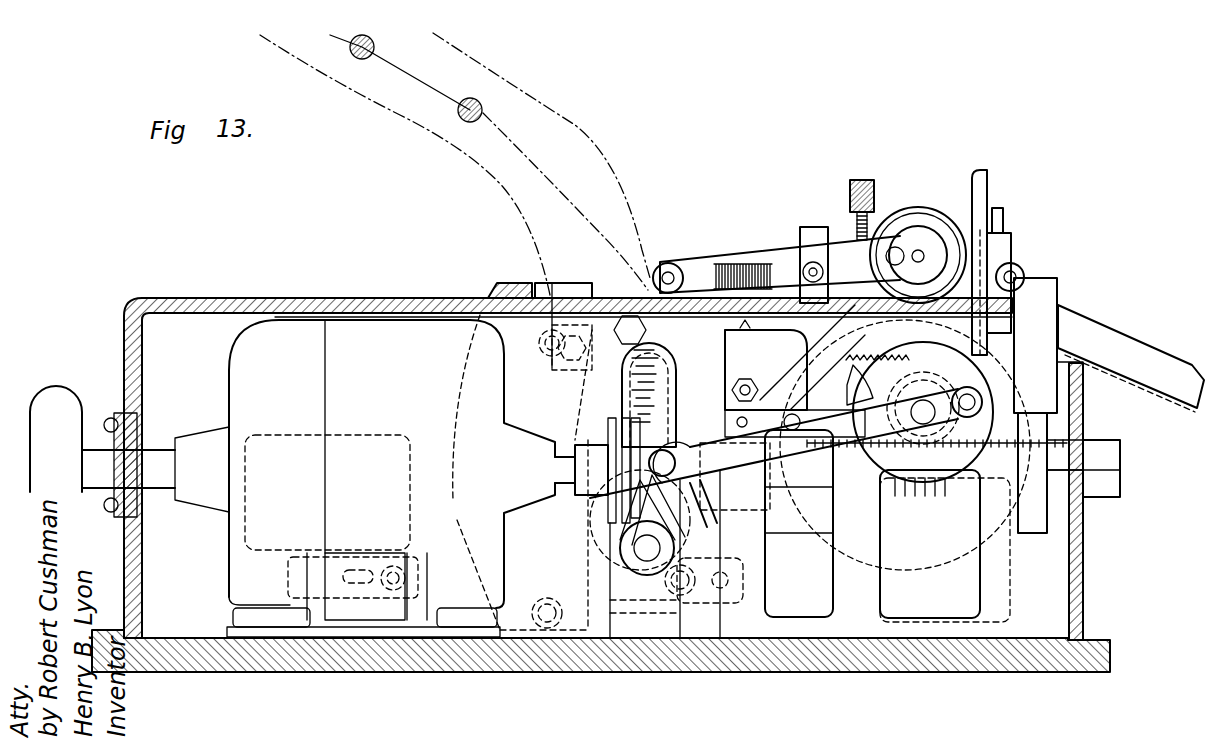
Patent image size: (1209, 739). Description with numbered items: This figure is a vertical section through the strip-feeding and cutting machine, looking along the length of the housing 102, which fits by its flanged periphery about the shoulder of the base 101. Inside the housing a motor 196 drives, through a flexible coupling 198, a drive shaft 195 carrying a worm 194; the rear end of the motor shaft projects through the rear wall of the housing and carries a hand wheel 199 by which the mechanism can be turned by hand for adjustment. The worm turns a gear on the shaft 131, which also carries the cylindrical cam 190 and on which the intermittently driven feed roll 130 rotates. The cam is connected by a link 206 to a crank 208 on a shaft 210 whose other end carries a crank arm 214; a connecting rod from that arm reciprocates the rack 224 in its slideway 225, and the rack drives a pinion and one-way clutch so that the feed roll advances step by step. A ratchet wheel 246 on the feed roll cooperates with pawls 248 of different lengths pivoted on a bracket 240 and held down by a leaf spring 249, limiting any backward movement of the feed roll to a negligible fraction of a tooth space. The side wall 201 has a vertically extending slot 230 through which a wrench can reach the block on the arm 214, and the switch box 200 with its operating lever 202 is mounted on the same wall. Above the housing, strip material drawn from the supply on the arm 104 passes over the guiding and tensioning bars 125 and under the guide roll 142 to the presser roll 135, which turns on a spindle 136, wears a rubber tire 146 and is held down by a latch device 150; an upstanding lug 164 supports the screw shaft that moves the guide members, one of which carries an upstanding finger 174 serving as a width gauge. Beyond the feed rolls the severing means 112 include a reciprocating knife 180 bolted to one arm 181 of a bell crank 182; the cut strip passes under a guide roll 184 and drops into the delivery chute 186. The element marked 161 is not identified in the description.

The base 101 is at (876, 666).
The housing 102 is at (118, 318).
The arm 104 is at (560, 120).
The severing means or cutters 112 is at (1028, 228).
The guiding and tensioning bars 125 is at (458, 108).
The feed roll 130 is at (912, 338).
The shaft 131 is at (799, 523).
The presser roll 135 is at (897, 226).
The spindle 136 is at (700, 266).
The guide roll 142 is at (660, 263).
The rubber tire 146 is at (947, 196).
The latch device 150 is at (845, 208).
The motor shaft 161 is at (566, 462).
The upstanding lug 164 is at (765, 251).
The upstanding finger 174 is at (812, 227).
The reciprocating knife 180 is at (1000, 205).
The arm 181 is at (987, 181).
The bell crank 182 is at (1014, 370).
The guide roll 184 is at (1026, 276).
The delivery chute 186 is at (1122, 348).
The cylindrical cam 190 is at (923, 412).
The worm 194 is at (933, 507).
The drive shaft 195 is at (958, 523).
The motor 196 is at (391, 476).
The flexible coupling 198 is at (600, 430).
The hand wheel 199 is at (53, 408).
The switch box 200 is at (292, 417).
The side wall 201 is at (567, 456).
The operating lever 202 is at (300, 585).
The link 206 is at (786, 442).
The crank 208 is at (617, 503).
The shaft 210 is at (620, 543).
The crank arm 214 is at (706, 412).
The rack 224 is at (1105, 432).
The slideway 225 is at (1048, 500).
The slot 230 is at (690, 360).
The bracket 240 is at (782, 420).
The ratchet wheel 246 is at (859, 374).
The detents or pawls 248 is at (869, 351).
The leaf spring 249 is at (738, 325).